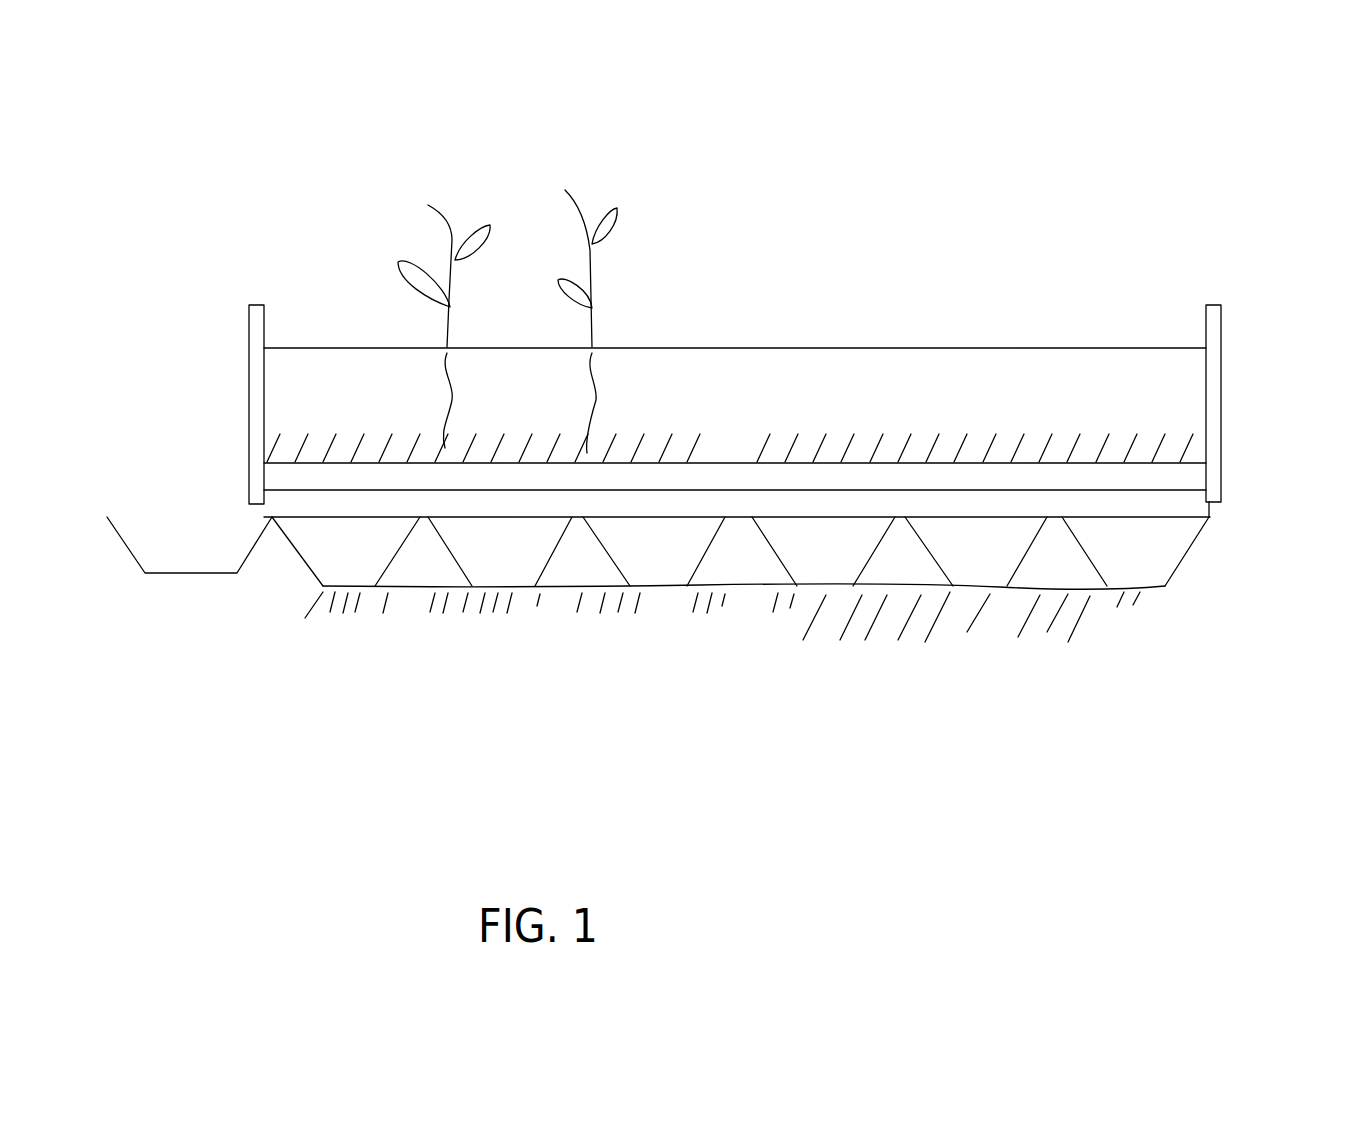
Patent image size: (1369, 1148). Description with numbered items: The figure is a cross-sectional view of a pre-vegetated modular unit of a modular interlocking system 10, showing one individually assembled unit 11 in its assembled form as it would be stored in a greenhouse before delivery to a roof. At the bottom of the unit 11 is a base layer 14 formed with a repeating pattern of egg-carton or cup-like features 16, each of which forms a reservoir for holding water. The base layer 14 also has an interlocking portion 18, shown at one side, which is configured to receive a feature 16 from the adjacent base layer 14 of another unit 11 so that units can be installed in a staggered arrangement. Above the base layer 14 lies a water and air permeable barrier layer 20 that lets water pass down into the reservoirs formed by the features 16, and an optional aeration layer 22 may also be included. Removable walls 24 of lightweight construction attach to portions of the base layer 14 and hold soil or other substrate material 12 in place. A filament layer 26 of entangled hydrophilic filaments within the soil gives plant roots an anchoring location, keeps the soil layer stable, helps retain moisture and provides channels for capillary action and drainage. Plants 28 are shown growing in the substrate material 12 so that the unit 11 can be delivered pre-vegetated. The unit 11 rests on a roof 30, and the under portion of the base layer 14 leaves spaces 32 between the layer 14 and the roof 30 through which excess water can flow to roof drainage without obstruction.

The modular interlocking system 10 is at (217, 176).
The unit 11 is at (1055, 263).
The soil or other substrate material 12 is at (700, 370).
The base layer 14 is at (1199, 541).
The cup-like features 16 is at (790, 548).
The interlocking portion 18 is at (180, 573).
The water and air permeable barrier layer 20 is at (1183, 480).
The aeration layer 22 is at (277, 498).
The removable walls 24 is at (248, 310).
The filament layer 26 is at (822, 442).
The plants 28 is at (465, 198).
The roof 30 is at (1098, 628).
The spaces 32 is at (418, 568).